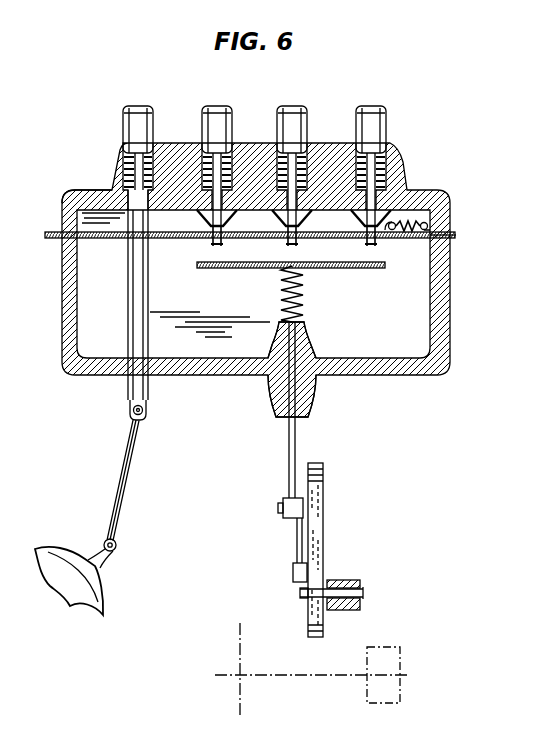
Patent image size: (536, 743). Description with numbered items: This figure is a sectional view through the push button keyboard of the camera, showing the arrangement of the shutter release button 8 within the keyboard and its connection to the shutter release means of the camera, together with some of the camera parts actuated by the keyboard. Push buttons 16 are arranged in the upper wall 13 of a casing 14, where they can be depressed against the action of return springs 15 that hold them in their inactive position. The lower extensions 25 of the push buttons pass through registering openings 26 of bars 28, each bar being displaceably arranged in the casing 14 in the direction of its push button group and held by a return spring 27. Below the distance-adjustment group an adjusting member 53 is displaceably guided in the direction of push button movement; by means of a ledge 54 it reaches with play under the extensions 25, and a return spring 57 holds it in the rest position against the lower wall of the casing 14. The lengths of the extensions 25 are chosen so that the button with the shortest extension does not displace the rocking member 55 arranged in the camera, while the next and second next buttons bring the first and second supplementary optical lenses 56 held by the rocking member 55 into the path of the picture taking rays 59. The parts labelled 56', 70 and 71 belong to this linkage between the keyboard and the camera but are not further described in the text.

The shutter release button 8 is at (126, 118).
The upper wall 13 is at (97, 192).
The casing 14 is at (450, 294).
The return springs 15 is at (124, 171).
The push buttons 16 is at (233, 121).
The extensions 25 is at (211, 247).
The registering openings 26 is at (236, 239).
The return spring 27 is at (412, 221).
The bars 28 is at (447, 251).
The adjusting member 53 is at (308, 337).
The ledge 54 is at (348, 269).
The rocking member 55 is at (323, 470).
The supplementary optical lenses 56 is at (321, 521).
The pinion shaft 56' is at (321, 602).
The return spring 57 is at (305, 302).
The picture taking rays 59 is at (388, 672).
The rod 70 is at (132, 471).
The pedal 71 is at (103, 565).